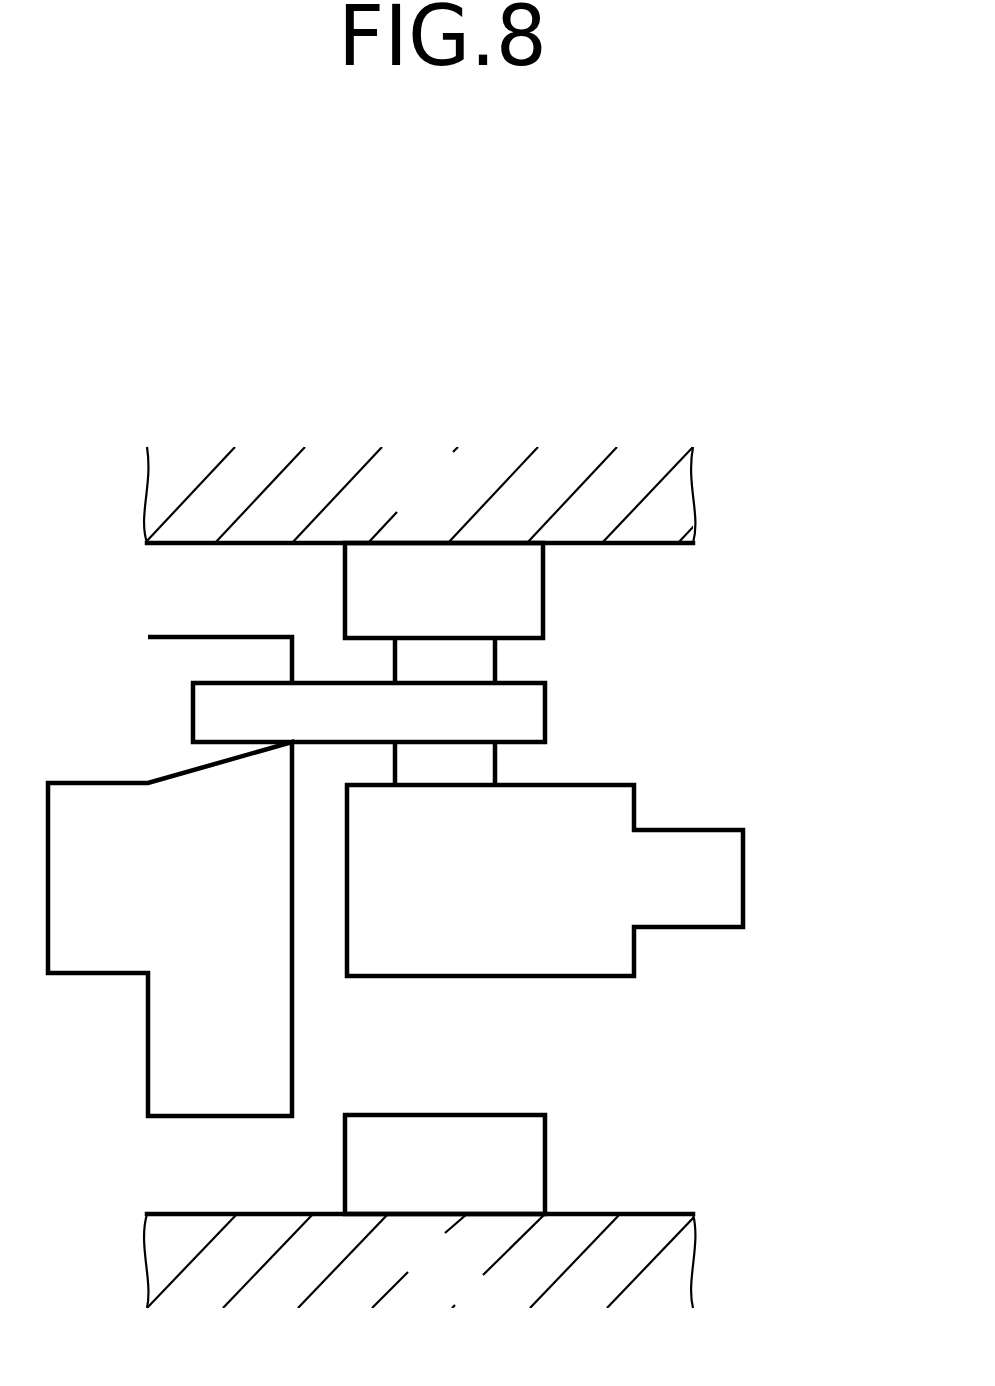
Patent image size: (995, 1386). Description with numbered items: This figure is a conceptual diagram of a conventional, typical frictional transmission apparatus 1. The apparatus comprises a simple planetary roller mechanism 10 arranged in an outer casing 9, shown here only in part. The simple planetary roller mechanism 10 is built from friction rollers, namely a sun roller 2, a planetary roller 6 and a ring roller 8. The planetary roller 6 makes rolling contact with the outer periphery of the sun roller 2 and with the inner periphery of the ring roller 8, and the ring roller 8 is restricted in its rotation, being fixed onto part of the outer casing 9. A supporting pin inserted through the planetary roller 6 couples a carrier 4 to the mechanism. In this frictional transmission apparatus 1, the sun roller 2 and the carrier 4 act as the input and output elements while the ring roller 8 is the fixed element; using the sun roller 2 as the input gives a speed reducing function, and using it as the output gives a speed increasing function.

The frictional transmission apparatus 1 is at (773, 342).
The sun roller 2 is at (634, 795).
The carrier 4 is at (90, 800).
The planetary roller 6 is at (495, 664).
The ring roller 8 is at (543, 585).
The outer casing 9 is at (437, 498).
The simple planetary roller mechanism 10 is at (687, 1084).